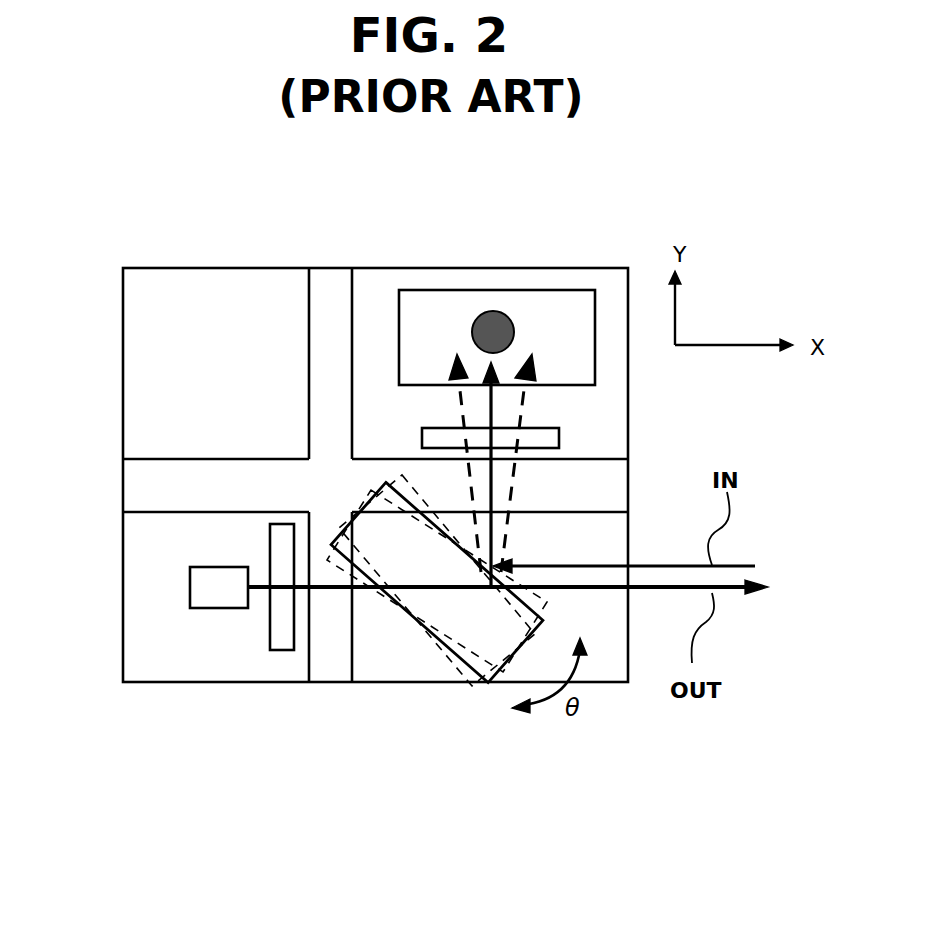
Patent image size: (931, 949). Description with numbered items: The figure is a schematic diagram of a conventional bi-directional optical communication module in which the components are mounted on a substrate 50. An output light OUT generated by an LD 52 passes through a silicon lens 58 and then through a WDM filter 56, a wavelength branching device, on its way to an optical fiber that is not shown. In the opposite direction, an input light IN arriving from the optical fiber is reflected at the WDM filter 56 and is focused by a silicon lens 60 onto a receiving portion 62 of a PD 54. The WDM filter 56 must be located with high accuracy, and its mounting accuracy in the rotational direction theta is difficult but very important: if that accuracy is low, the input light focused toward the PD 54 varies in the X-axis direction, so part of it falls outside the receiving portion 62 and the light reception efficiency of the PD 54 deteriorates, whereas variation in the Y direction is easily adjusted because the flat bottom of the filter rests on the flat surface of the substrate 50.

The substrate 50 is at (194, 277).
The LD 52 is at (190, 583).
The PD 54 is at (432, 292).
The WDM filter 56 is at (408, 610).
The collimator lens 58 is at (282, 650).
The silicon lens 60 is at (559, 439).
The receiving portion 62 is at (497, 312).